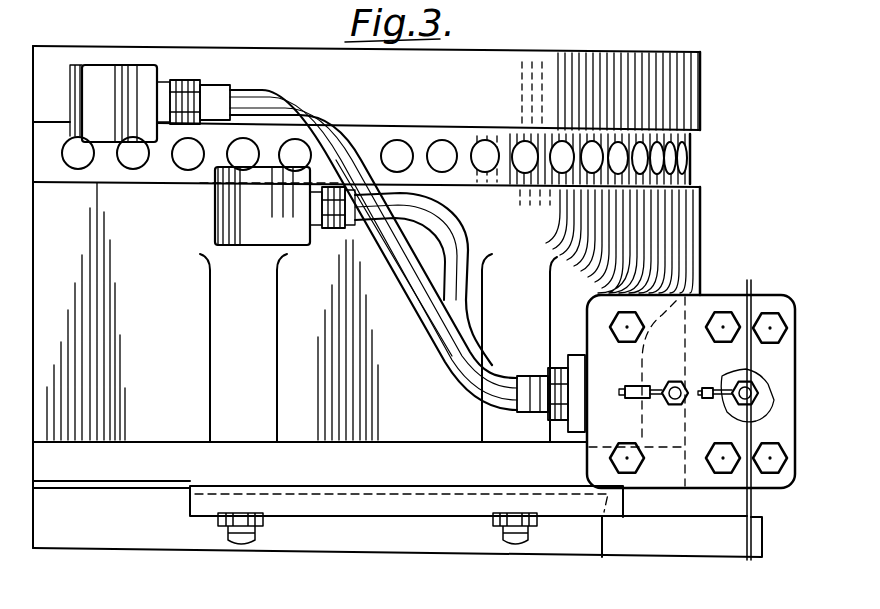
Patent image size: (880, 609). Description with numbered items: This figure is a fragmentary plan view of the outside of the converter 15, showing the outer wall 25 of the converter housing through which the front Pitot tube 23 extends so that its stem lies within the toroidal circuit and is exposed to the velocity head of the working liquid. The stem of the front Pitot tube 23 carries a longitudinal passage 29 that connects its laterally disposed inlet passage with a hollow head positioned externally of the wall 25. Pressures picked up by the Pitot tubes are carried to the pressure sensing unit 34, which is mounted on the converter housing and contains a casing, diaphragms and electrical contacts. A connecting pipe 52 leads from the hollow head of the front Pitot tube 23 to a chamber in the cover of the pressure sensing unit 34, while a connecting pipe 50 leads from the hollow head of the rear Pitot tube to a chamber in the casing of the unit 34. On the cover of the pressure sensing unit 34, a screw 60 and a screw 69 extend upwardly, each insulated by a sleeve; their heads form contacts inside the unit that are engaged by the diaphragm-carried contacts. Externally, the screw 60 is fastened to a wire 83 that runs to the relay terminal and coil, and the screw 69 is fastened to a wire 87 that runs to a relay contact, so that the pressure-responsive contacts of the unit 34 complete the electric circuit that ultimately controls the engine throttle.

The converter 15 is at (717, 82).
The front Pitot tube 23 is at (128, 100).
The outer wall 25 is at (418, 92).
The longitudinal passage 29 is at (282, 222).
The pressure sensing unit 34 is at (760, 294).
The connecting pipe 50 is at (437, 210).
The connecting pipe 52 is at (267, 94).
The screw 60 is at (754, 388).
The screw 69 is at (677, 382).
The wire 83 is at (705, 388).
The wire 87 is at (632, 386).